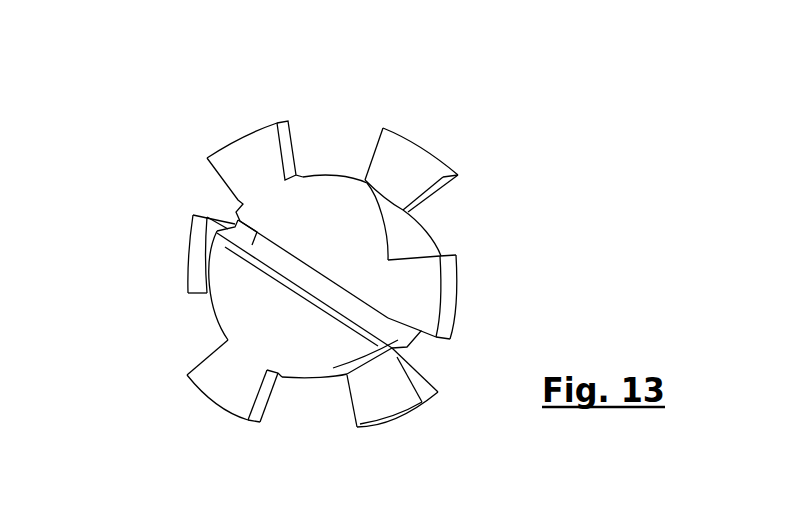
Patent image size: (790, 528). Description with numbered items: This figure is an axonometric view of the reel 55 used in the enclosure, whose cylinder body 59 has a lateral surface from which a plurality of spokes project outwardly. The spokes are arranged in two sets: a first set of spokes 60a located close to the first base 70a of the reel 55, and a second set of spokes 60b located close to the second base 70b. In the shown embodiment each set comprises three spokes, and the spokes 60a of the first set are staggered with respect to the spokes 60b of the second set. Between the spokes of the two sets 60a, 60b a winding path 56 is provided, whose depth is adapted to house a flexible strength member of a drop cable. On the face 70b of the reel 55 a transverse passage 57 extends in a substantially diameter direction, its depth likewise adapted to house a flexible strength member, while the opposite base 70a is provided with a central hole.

The reel 55 is at (361, 289).
The winding path 56 is at (333, 132).
The transverse passage 57 is at (224, 215).
The cylindrical body 59 is at (370, 261).
The first set of spokes 60a is at (433, 146).
The second set of spokes 60b is at (240, 133).
The first base 70a is at (430, 230).
The second base 70b is at (347, 248).